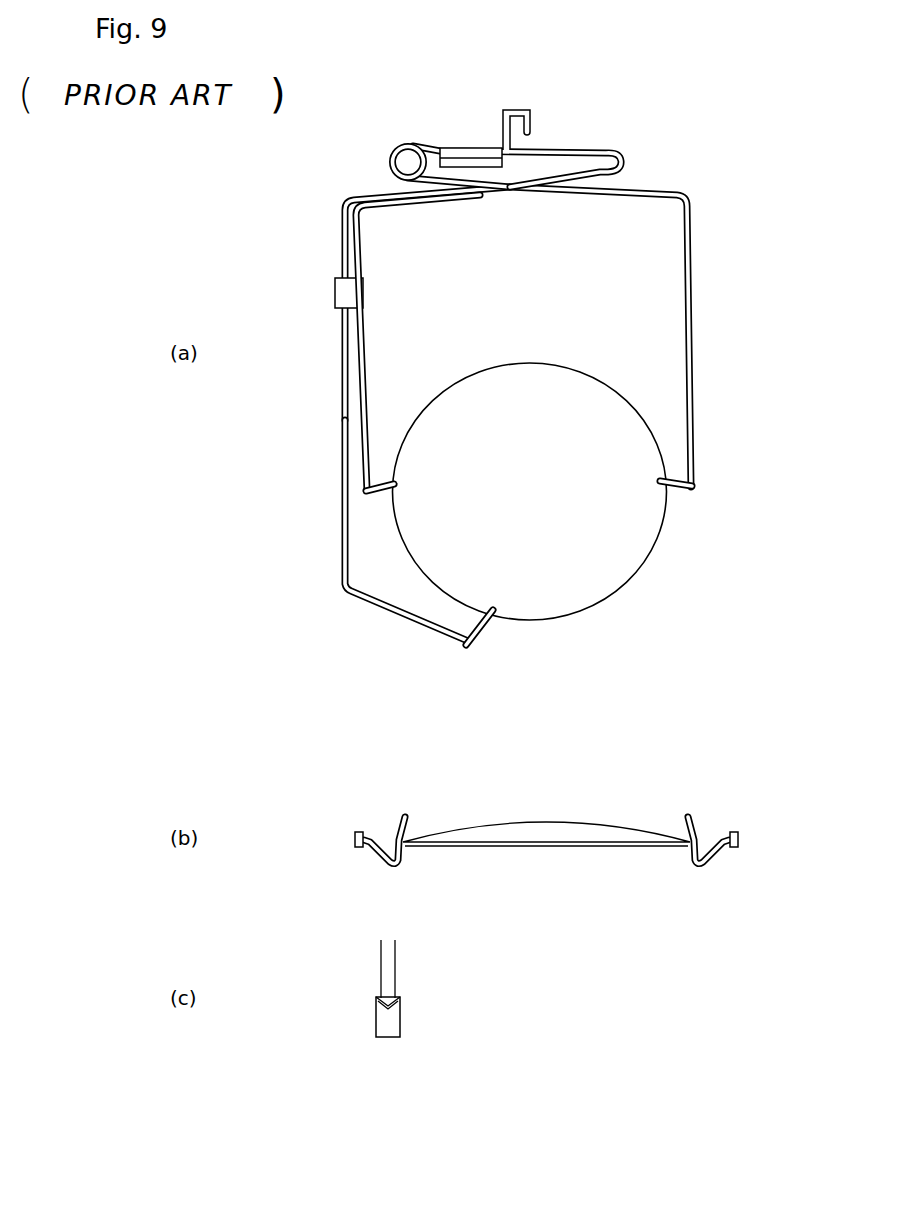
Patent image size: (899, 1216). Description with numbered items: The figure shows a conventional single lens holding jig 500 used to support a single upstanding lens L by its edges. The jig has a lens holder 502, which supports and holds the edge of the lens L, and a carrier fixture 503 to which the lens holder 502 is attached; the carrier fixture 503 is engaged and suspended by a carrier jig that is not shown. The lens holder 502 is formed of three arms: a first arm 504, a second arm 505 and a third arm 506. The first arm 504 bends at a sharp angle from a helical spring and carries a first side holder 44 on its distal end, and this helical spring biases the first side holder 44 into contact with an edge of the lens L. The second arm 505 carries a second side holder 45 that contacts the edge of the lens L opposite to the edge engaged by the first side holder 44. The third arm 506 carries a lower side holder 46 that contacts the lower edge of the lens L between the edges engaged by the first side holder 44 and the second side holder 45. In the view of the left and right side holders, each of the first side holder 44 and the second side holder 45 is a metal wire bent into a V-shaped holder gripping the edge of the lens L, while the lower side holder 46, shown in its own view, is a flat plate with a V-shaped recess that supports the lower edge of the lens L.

The single lens holding jig 500 is at (529, 358).
The lens holder 502 is at (312, 245).
The carrier fixture 503 is at (545, 118).
The first arm 504 is at (700, 300).
The second arm 505 is at (392, 355).
The third arm 506 is at (310, 560).
The first side holder 44 is at (684, 495).
The second side holder 45 is at (385, 494).
The lower side holder 46 is at (493, 622).
The lens L is at (612, 568).